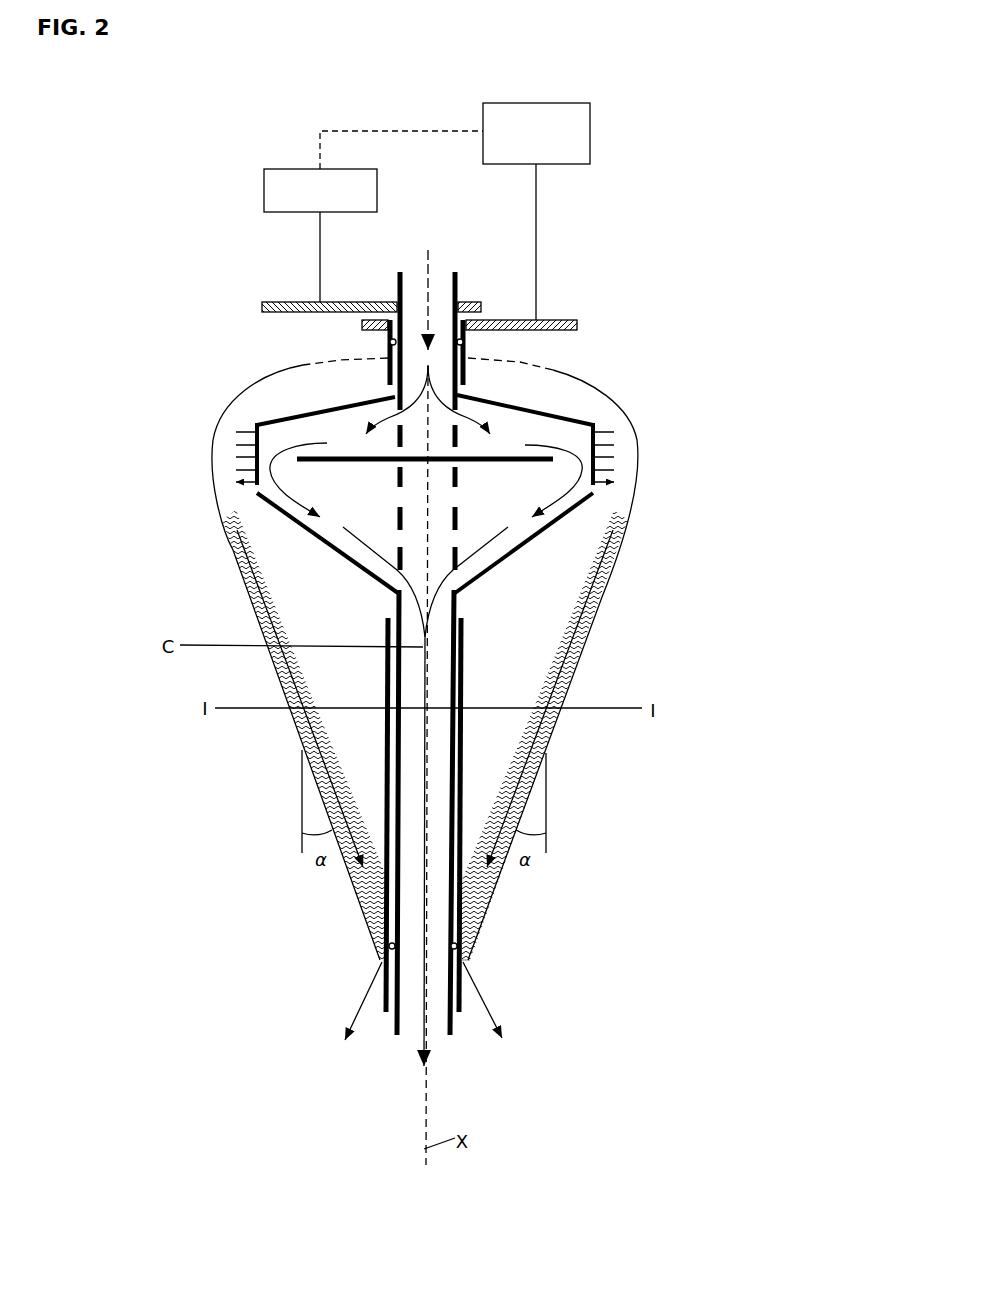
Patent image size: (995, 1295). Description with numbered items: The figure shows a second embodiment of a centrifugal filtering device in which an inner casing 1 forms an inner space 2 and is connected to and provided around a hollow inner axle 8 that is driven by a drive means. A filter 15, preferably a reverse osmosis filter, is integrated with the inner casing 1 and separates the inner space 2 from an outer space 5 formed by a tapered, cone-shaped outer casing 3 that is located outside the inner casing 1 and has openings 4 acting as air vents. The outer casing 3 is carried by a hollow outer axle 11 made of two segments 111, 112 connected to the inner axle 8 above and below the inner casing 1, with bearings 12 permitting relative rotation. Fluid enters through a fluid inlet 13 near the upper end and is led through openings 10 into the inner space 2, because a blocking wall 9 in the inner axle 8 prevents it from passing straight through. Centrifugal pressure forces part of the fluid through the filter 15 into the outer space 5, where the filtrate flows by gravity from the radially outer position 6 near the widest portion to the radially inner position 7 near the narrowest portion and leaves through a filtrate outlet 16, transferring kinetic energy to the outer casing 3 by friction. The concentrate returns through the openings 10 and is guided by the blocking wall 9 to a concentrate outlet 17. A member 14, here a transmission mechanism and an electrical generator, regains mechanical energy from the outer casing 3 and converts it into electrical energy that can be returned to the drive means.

The inner casing 1 is at (572, 430).
The inner space 2 is at (590, 423).
The outer casing 3 is at (602, 605).
The openings 4 is at (497, 353).
The outer space 5 is at (570, 547).
The radially outer position 6 is at (628, 445).
The radially inner position 7 is at (472, 935).
The inner axle 8 is at (453, 273).
The blocking wall 9 is at (498, 457).
The openings 10 is at (395, 420).
The outer axle 11 is at (388, 320).
The bearings 12 is at (389, 946).
The fluid inlet 13 is at (427, 285).
The member 14 is at (560, 272).
The filter 15 is at (255, 427).
The filtrate outlet 16 is at (493, 1019).
The concentrate outlet 17 is at (440, 869).
The segment 111 is at (387, 357).
The segment 112 is at (483, 922).